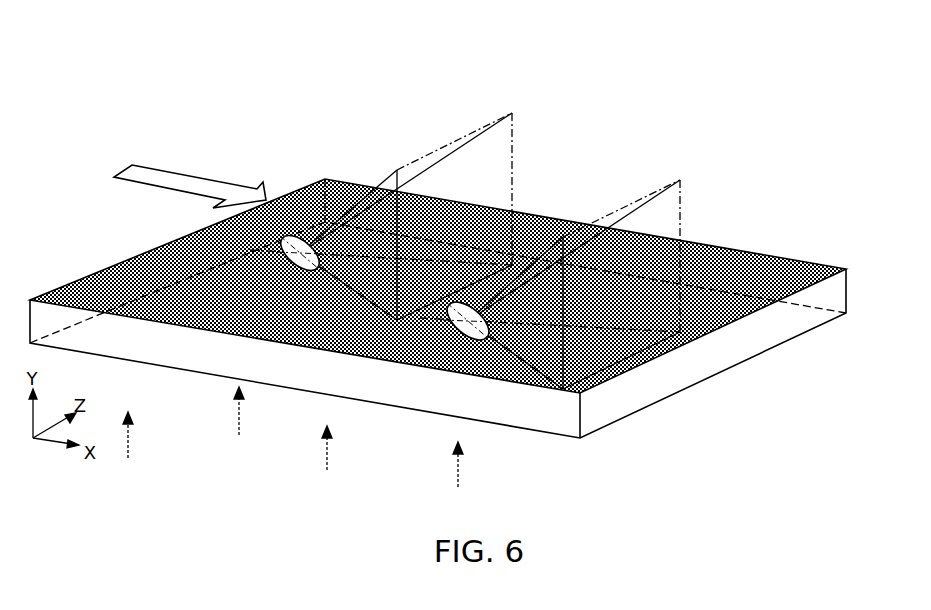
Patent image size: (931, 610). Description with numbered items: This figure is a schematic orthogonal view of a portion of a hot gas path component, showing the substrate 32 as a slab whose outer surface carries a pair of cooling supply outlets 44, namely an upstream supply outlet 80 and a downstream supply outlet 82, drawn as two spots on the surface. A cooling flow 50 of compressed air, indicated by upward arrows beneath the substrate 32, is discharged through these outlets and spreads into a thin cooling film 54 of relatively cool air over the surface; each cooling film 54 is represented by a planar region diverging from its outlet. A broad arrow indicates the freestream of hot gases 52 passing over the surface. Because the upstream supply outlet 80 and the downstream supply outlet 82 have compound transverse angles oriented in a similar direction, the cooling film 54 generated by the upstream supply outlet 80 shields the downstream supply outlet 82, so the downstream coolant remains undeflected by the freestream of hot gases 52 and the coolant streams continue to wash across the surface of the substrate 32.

The substrate 32 is at (765, 254).
The cooling supply outlets 44 is at (458, 251).
The upstream supply outlet 80 is at (283, 235).
The downstream supply outlet 82 is at (465, 300).
The cooling film 54 is at (513, 140).
The freestream of hot gases 52 is at (120, 170).
The cooling flow 50 is at (240, 418).